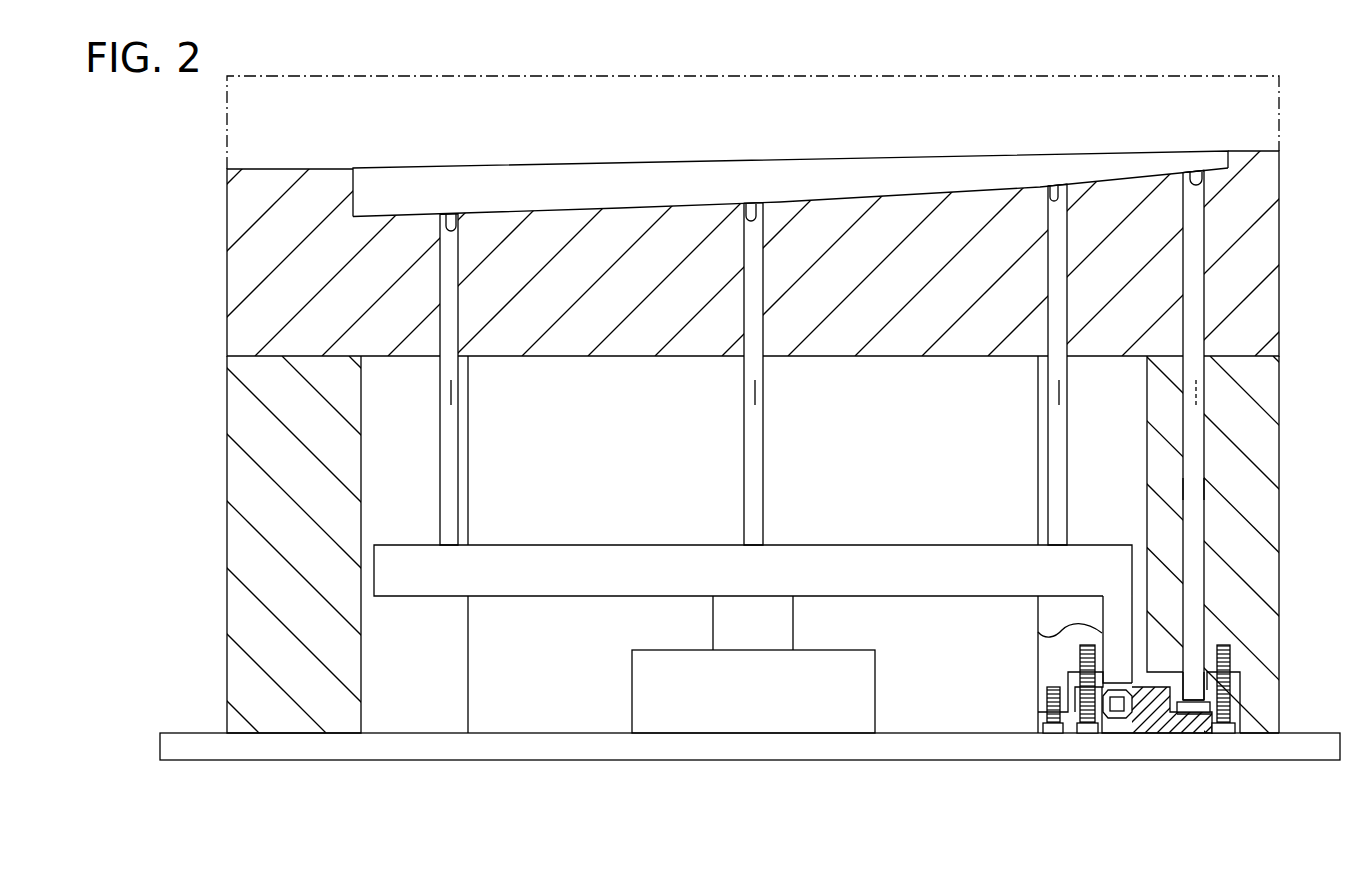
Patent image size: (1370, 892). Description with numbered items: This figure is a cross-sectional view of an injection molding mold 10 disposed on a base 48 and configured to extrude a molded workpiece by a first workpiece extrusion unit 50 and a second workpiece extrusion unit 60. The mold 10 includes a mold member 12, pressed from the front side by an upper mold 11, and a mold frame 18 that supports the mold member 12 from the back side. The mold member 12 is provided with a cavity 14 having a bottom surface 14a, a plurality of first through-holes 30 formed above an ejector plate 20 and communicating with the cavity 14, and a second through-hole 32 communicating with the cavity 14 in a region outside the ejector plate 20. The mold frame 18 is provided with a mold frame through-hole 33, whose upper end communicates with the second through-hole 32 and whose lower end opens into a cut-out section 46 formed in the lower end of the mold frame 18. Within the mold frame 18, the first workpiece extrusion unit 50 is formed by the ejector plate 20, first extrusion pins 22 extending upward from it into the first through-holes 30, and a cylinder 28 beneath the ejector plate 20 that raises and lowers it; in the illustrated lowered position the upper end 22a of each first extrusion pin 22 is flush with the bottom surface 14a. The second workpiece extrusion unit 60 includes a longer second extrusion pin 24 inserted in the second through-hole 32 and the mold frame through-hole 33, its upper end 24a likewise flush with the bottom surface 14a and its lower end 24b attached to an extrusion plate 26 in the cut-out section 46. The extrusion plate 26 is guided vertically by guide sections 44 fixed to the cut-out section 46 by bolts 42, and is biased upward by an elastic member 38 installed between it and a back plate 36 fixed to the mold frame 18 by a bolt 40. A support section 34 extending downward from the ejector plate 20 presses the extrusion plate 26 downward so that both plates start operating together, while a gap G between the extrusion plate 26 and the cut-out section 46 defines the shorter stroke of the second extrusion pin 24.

The injection molding mold 10 is at (156, 143).
The upper mold 11 is at (1270, 107).
The mold member 12 is at (1237, 207).
The cavity 14 is at (651, 185).
The bottom surface of cavity 14a is at (620, 205).
The mold frame 18 is at (1237, 408).
The ejector plate 20 is at (885, 560).
The first extrusion pin 22 is at (452, 438).
The upper end of first extrusion pin 22a is at (452, 212).
The second extrusion pin 24 is at (1193, 290).
The upper end of second extrusion pin 24a is at (1193, 176).
The lower end of second extrusion pin 24b is at (1206, 735).
The extrusion plate 26 is at (1185, 735).
The cylinder 28 is at (765, 702).
The first through-hole 30 is at (453, 224).
The second through-hole 32 is at (1196, 174).
The mold frame through-hole 33 is at (1190, 480).
The support section 34 is at (1117, 590).
The back plate 36 is at (1070, 735).
The elastic member 38 is at (1120, 735).
The bolt 40 is at (1047, 693).
The bolt 42 is at (1068, 683).
The guide section 44 is at (1075, 667).
The cut-out section 46 is at (1186, 690).
The base 48 is at (953, 750).
The first workpiece extrusion unit 50 is at (567, 705).
The second workpiece extrusion unit 60 is at (1256, 768).
The gap G is at (1158, 735).